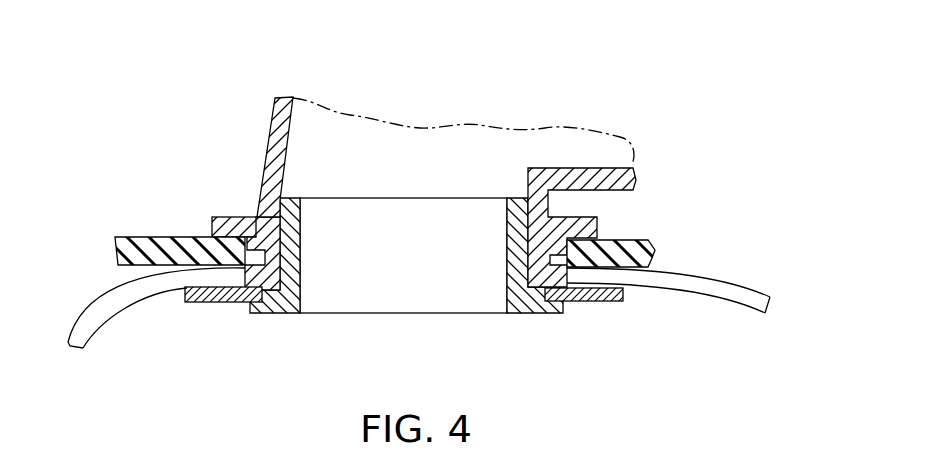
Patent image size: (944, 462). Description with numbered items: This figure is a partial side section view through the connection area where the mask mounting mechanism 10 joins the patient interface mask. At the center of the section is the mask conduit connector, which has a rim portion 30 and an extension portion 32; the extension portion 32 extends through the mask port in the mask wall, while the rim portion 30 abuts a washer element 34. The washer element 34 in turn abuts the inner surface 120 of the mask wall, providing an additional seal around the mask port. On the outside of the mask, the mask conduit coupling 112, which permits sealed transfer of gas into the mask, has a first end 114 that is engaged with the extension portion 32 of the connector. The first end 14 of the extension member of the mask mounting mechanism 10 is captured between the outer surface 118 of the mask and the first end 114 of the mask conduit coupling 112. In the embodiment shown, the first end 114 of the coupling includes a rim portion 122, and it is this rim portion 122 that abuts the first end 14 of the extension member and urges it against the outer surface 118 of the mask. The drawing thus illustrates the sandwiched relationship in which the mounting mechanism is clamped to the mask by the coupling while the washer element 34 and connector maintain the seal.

The mask mounting mechanism 10 is at (670, 246).
The first end of extension member 14 is at (638, 224).
The rim portion of mask conduit connector 30 is at (547, 313).
The extension portion of mask conduit connector 32 is at (300, 233).
The washer element 34 is at (613, 302).
The mask conduit coupling 112 is at (276, 76).
The first end of mask conduit coupling 114 is at (236, 129).
The outer surface of mask 118 is at (755, 287).
The inner surface of mask wall 120 is at (132, 302).
The rim portion of mask conduit coupling first end 122 is at (215, 200).